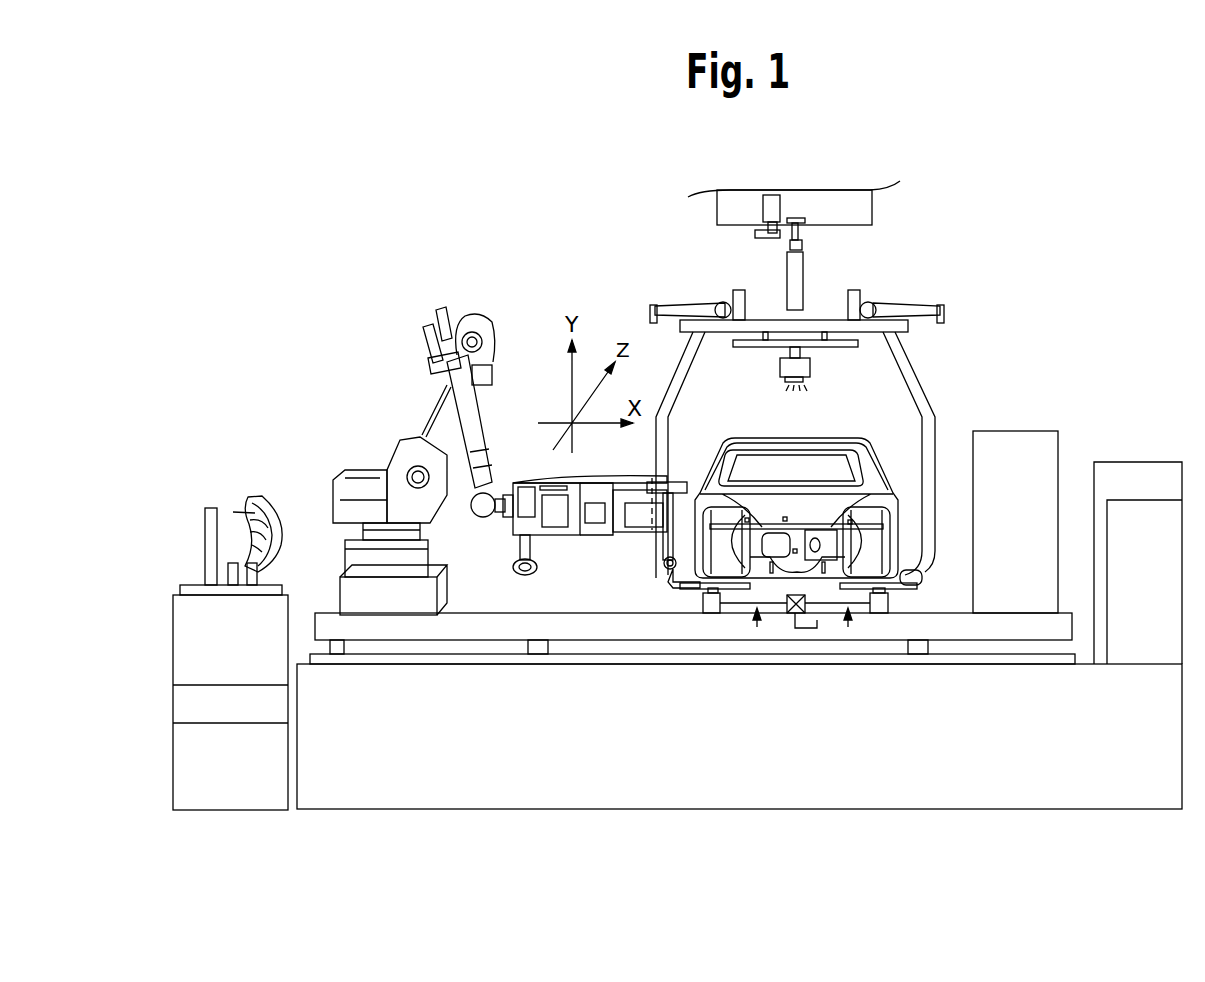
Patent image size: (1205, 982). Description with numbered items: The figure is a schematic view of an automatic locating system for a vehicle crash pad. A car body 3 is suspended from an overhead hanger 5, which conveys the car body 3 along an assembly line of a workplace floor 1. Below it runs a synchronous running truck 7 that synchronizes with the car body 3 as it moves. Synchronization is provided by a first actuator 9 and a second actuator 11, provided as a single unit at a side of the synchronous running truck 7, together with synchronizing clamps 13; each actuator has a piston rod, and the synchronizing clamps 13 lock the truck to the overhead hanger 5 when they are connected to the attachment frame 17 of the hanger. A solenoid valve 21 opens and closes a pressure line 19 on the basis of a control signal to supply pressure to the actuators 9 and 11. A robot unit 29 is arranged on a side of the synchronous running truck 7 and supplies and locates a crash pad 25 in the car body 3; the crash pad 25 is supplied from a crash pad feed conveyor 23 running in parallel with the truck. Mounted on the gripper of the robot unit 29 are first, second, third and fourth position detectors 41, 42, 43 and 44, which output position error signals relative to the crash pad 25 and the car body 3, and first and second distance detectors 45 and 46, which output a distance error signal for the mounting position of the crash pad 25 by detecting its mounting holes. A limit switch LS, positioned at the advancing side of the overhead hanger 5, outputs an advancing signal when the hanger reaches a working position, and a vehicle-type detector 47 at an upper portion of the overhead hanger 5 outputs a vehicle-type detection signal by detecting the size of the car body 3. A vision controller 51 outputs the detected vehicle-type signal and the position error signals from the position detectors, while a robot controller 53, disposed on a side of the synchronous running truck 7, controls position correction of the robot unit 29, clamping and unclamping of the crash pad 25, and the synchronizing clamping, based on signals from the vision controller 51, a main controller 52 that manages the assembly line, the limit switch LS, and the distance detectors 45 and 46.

The workplace floor 1 is at (1014, 650).
The car body 3 is at (854, 430).
The overhead hanger 5 is at (927, 372).
The synchronous running truck 7 is at (503, 618).
The first actuator 9 is at (712, 598).
The second actuator 11 is at (878, 598).
The synchronizing clamps 13 is at (888, 595).
The attachment frame 17 is at (863, 590).
The pressure line 19 is at (848, 628).
The solenoid valve 21 is at (792, 615).
The crash pad feed conveyor 23 is at (275, 579).
The crash pad 25 is at (267, 490).
The robot unit 29 is at (397, 425).
The first position detector 41 is at (525, 481).
The second position detector 42 is at (672, 486).
The third position detector 43 is at (520, 552).
The fourth position detector 44 is at (665, 540).
The first distance detector 45 is at (513, 567).
The second distance detector 46 is at (666, 567).
The vehicle-type detector 47 is at (811, 365).
The vision controller 51 is at (1139, 500).
The main controller 52 is at (1140, 462).
The robot controller 53 is at (1043, 431).
The limit switch LS is at (772, 196).